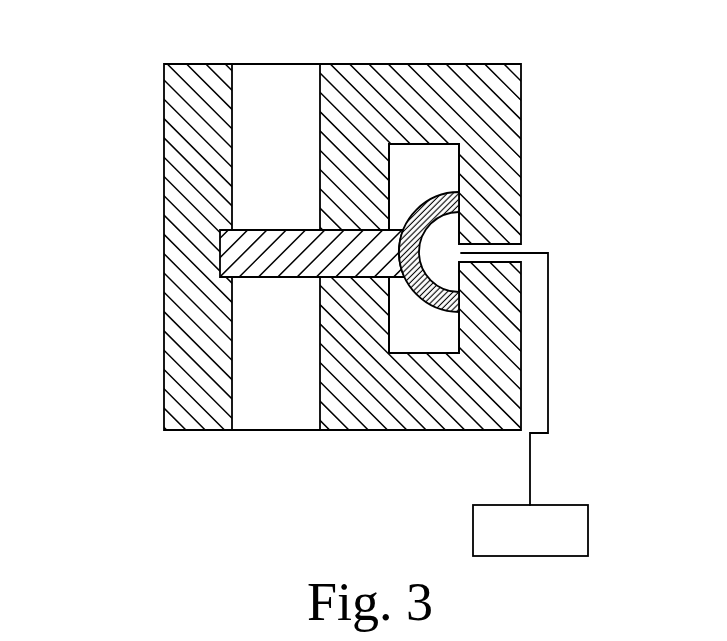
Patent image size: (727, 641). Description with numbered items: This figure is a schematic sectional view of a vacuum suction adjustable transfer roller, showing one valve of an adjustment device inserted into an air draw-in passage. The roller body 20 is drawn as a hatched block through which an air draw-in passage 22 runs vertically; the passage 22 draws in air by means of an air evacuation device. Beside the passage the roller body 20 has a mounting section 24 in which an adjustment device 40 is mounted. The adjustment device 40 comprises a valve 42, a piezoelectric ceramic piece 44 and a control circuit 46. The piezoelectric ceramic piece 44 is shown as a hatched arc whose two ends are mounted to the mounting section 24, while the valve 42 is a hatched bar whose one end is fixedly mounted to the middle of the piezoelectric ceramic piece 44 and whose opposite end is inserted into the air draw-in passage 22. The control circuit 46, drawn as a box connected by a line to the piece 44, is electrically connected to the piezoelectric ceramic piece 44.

The roller body 20 is at (175, 152).
The air draw-in passage 22 is at (268, 88).
The mounting section 24 is at (483, 317).
The adjustment device 40 is at (423, 316).
The valve 42 is at (362, 245).
The piezoelectric ceramic piece 44 is at (450, 205).
The control circuit 46 is at (533, 518).